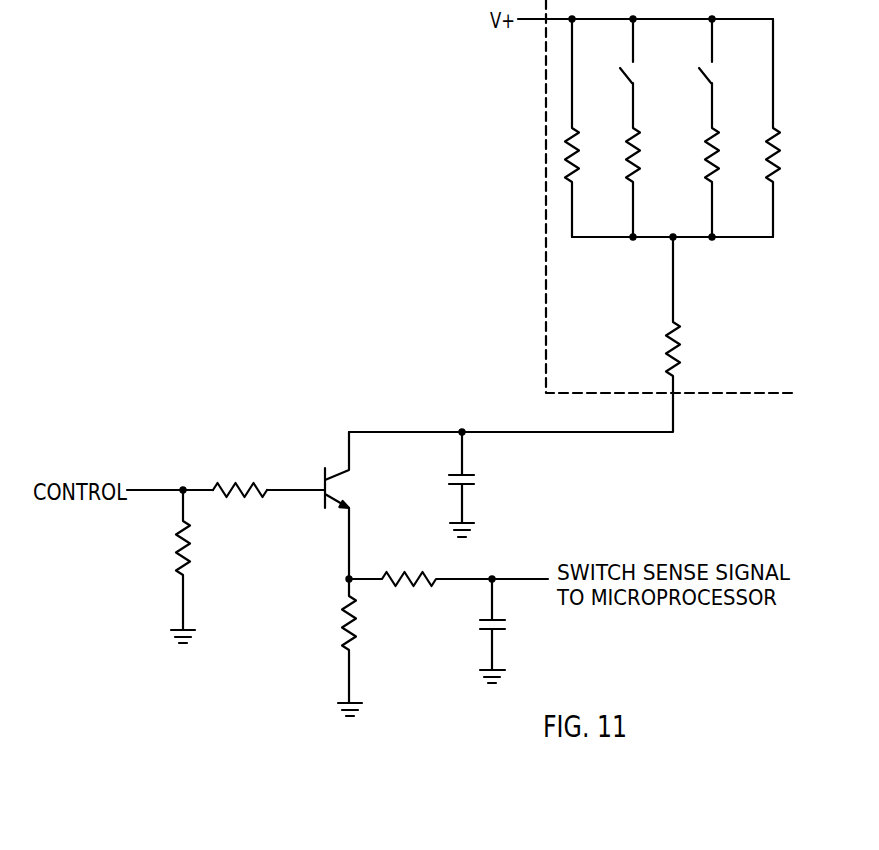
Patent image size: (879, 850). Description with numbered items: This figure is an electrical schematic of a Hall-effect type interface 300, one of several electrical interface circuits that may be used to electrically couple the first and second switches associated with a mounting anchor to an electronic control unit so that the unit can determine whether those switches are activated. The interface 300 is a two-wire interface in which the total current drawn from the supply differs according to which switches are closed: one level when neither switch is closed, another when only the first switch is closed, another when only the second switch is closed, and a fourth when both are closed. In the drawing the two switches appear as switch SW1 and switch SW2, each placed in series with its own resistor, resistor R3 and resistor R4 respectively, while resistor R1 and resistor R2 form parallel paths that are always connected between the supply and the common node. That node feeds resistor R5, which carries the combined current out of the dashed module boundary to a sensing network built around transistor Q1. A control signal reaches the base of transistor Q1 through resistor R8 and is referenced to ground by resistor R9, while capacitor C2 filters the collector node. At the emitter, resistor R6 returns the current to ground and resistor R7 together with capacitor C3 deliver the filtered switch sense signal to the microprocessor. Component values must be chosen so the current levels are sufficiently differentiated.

The Hall-effect type interface 300 is at (477, 140).
The resistor R1 is at (586, 128).
The resistor R2 is at (787, 128).
The resistor R3 is at (647, 160).
The resistor R4 is at (728, 160).
The resistor R5 is at (530, 334).
The resistor R6 is at (363, 647).
The resistor R7 is at (448, 563).
The resistor R8 is at (240, 474).
The resistor R9 is at (196, 566).
The switch SW1 is at (650, 53).
The switch SW2 is at (729, 53).
The transistor Q1 is at (355, 505).
The capacitor C2 is at (476, 484).
The capacitor C3 is at (507, 631).